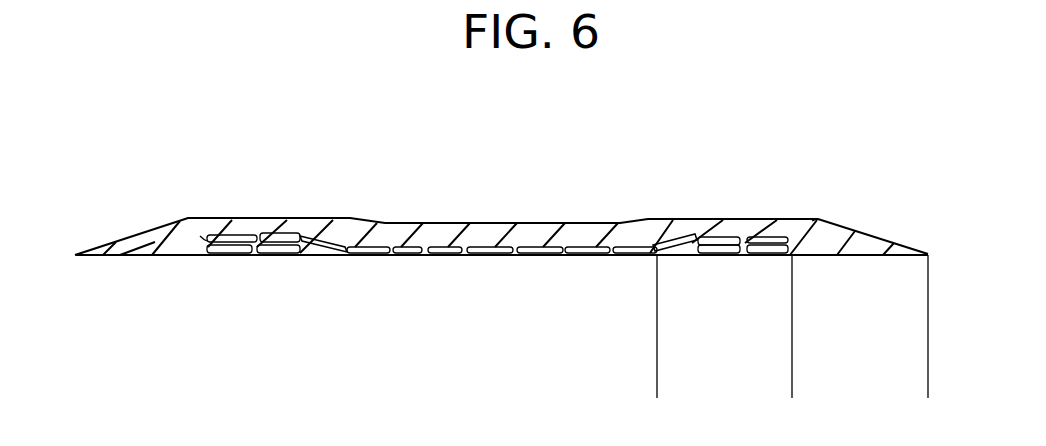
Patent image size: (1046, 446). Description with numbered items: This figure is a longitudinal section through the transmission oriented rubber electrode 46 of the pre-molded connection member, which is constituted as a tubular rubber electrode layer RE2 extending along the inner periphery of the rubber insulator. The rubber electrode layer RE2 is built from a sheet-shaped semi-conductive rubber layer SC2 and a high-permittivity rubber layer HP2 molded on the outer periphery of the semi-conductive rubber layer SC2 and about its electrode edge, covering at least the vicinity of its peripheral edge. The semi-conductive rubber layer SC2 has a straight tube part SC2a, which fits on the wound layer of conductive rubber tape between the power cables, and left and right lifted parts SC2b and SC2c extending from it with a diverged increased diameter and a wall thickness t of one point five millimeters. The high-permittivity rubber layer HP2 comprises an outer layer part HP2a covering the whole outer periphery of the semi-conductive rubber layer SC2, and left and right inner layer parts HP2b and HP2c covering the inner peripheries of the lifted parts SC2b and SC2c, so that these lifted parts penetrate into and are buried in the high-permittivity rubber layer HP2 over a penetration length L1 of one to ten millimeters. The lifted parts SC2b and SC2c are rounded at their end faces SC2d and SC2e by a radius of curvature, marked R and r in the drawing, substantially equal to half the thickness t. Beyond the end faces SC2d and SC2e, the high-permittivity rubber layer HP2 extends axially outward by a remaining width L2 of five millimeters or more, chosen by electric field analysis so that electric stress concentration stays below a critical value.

The transmission oriented rubber electrode 46 is at (520, 207).
The high-permittivity rubber layer HP2 is at (805, 264).
The outer layer part HP2a is at (410, 223).
The left inner layer part HP2b is at (190, 255).
The right inner layer part HP2c is at (755, 255).
The semi-conductive rubber layer SC2 is at (630, 263).
The straight tube part SC2a is at (502, 257).
The left lifted part SC2b is at (238, 255).
The right lifted part SC2c is at (728, 255).
The end face of left lifted part SC2d is at (213, 232).
The end face of right lifted part SC2e is at (792, 235).
The rubber electrode layer RE2 is at (576, 212).
The corner radius R is at (205, 240).
The corner radius r is at (805, 227).
The wall thickness t is at (425, 213).
The penetration length L1 is at (792, 387).
The remaining width L2 is at (928, 387).